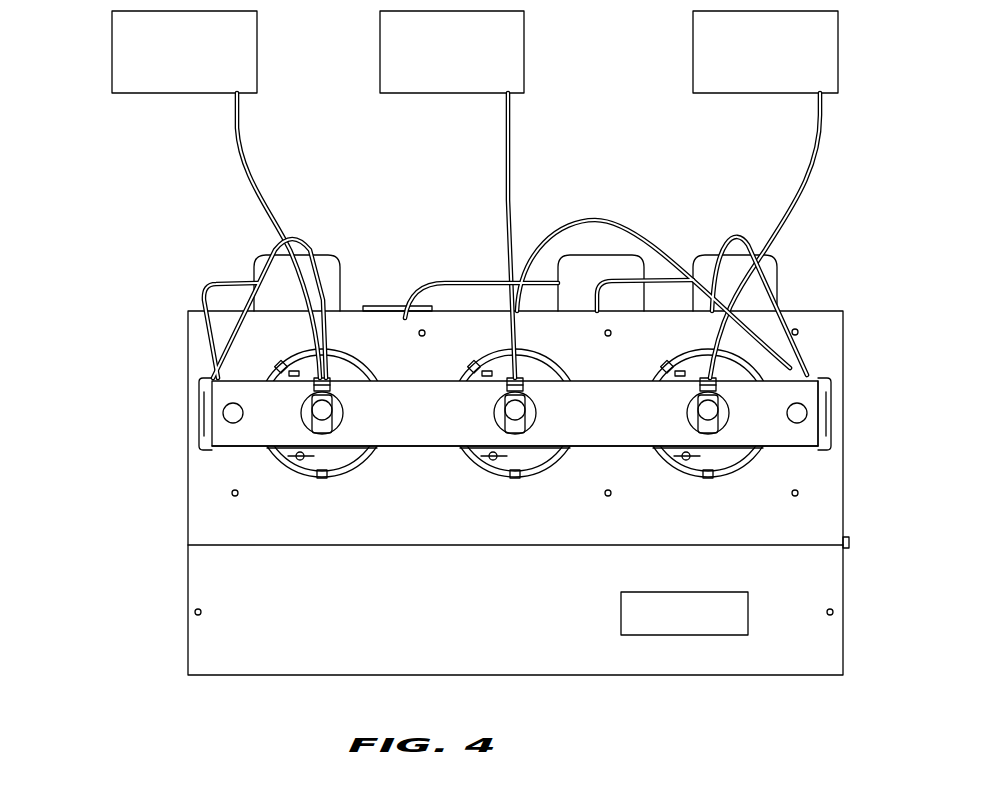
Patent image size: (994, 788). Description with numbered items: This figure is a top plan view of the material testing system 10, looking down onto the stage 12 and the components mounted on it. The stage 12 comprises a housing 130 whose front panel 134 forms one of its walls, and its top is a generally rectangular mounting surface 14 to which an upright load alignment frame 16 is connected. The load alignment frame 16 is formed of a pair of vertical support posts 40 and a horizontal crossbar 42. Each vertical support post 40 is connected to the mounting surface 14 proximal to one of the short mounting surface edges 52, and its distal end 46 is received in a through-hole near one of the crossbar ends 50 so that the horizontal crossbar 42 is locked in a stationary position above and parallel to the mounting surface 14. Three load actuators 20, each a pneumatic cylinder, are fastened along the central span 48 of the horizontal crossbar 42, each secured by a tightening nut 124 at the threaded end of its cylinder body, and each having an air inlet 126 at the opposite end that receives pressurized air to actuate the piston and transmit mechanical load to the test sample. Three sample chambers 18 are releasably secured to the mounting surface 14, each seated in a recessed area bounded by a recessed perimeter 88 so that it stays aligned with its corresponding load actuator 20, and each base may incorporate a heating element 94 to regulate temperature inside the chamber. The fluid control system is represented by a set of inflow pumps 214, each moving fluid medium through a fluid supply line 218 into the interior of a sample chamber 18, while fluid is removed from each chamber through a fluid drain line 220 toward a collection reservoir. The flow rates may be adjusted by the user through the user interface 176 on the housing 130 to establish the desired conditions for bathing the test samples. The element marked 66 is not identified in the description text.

The material testing system 10 is at (860, 208).
The stage 12 is at (848, 355).
The mounting surface 14 is at (515, 454).
The load alignment frame 16 is at (221, 452).
The sample chamber 18 is at (317, 489).
The load actuator 20 is at (300, 404).
The vertical support post 40 is at (796, 425).
The horizontal crossbar 42 is at (235, 425).
The distal end 46 is at (226, 413).
The central span 48 is at (582, 450).
The crossbar end 50 is at (208, 430).
The short mounting surface edge 52 is at (187, 520).
The pump handle 66 is at (338, 453).
The recessed perimeter 88 is at (335, 352).
The heating element 94 is at (278, 362).
The tightening nut 124 is at (302, 428).
The air inlet 126 is at (332, 383).
The housing 130 is at (180, 567).
The front panel 134 is at (515, 610).
The user interface 176 is at (625, 612).
The inflow pump 214 is at (140, 52).
The fluid supply line 218 is at (236, 135).
The fluid drain line 220 is at (213, 284).